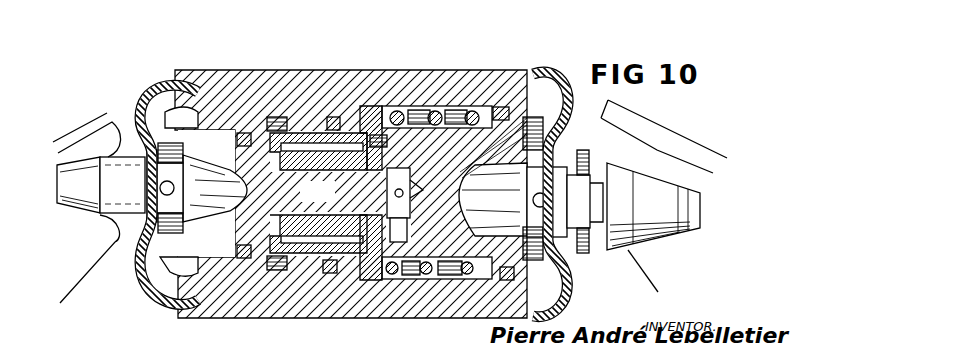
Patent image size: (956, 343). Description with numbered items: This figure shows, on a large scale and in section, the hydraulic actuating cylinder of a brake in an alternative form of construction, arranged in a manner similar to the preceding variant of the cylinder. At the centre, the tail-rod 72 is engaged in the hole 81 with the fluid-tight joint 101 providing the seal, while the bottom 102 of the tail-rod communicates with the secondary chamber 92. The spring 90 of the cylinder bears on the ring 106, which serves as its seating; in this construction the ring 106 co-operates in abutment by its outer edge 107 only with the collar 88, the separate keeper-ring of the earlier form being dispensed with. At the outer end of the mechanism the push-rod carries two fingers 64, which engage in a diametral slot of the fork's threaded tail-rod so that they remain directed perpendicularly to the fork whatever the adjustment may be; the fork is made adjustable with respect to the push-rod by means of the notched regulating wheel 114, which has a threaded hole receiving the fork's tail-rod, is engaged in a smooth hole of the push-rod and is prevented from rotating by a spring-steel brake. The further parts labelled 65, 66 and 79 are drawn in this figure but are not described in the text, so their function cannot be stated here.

The housing 65 is at (222, 130).
The hole 81 is at (306, 133).
The collar 88 is at (368, 106).
The outer edge 107 is at (397, 111).
The ring 106 is at (397, 141).
The tail-rod 72 is at (334, 202).
The fingers 64 is at (493, 177).
The bellows seal 66 is at (558, 118).
The secondary chamber 92 is at (455, 274).
The spring 90 is at (427, 274).
The bottom 102 is at (396, 242).
The fluid-tight joint 101 is at (370, 210).
The ring gear piece 79 is at (285, 270).
The notched regulating wheel 114 is at (583, 254).